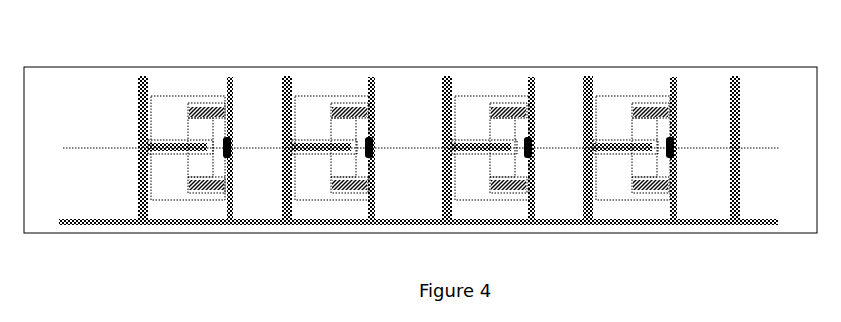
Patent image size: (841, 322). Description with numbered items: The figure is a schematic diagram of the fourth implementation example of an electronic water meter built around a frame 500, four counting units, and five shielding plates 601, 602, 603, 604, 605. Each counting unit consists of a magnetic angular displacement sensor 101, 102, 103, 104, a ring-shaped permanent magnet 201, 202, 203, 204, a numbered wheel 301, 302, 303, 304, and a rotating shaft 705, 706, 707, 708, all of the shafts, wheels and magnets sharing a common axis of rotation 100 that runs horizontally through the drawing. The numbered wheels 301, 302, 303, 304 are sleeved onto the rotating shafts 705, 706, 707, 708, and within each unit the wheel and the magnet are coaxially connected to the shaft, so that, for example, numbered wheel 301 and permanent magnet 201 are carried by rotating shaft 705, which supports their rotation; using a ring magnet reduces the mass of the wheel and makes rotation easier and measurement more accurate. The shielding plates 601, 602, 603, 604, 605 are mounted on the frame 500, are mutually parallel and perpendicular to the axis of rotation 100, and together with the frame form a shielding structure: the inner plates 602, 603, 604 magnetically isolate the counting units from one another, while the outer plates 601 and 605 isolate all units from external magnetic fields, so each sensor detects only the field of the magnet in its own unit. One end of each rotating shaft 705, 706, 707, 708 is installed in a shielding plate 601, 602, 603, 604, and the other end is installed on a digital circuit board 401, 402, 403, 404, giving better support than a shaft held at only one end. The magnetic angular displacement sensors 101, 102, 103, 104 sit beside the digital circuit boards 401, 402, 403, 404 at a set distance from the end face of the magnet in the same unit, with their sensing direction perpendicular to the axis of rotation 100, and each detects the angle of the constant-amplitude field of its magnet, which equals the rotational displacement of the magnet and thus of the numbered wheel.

The axis of rotation 100 is at (93, 147).
The magnetic angular displacement sensor 101 is at (225, 157).
The magnetic angular displacement sensor 102 is at (368, 157).
The magnetic angular displacement sensor 103 is at (528, 157).
The magnetic angular displacement sensor 104 is at (670, 157).
The ring-shaped permanent magnet 201 is at (202, 112).
The ring-shaped permanent magnet 202 is at (343, 108).
The ring-shaped permanent magnet 203 is at (505, 108).
The ring-shaped permanent magnet 204 is at (645, 108).
The numbered wheel 301 is at (172, 202).
The numbered wheel 302 is at (315, 202).
The numbered wheel 303 is at (475, 202).
The numbered wheel 304 is at (613, 203).
The digital circuit board 401 is at (232, 100).
The digital circuit board 402 is at (373, 103).
The digital circuit board 403 is at (533, 103).
The digital circuit board 404 is at (677, 103).
The frame 500 is at (92, 225).
The shielding plate 601 is at (138, 100).
The shielding plate 602 is at (292, 97).
The shielding plate 603 is at (452, 97).
The shielding plate 604 is at (592, 97).
The shielding plate 605 is at (740, 97).
The rotating shaft 705 is at (165, 153).
The rotating shaft 706 is at (320, 153).
The rotating shaft 707 is at (475, 153).
The rotating shaft 708 is at (622, 153).